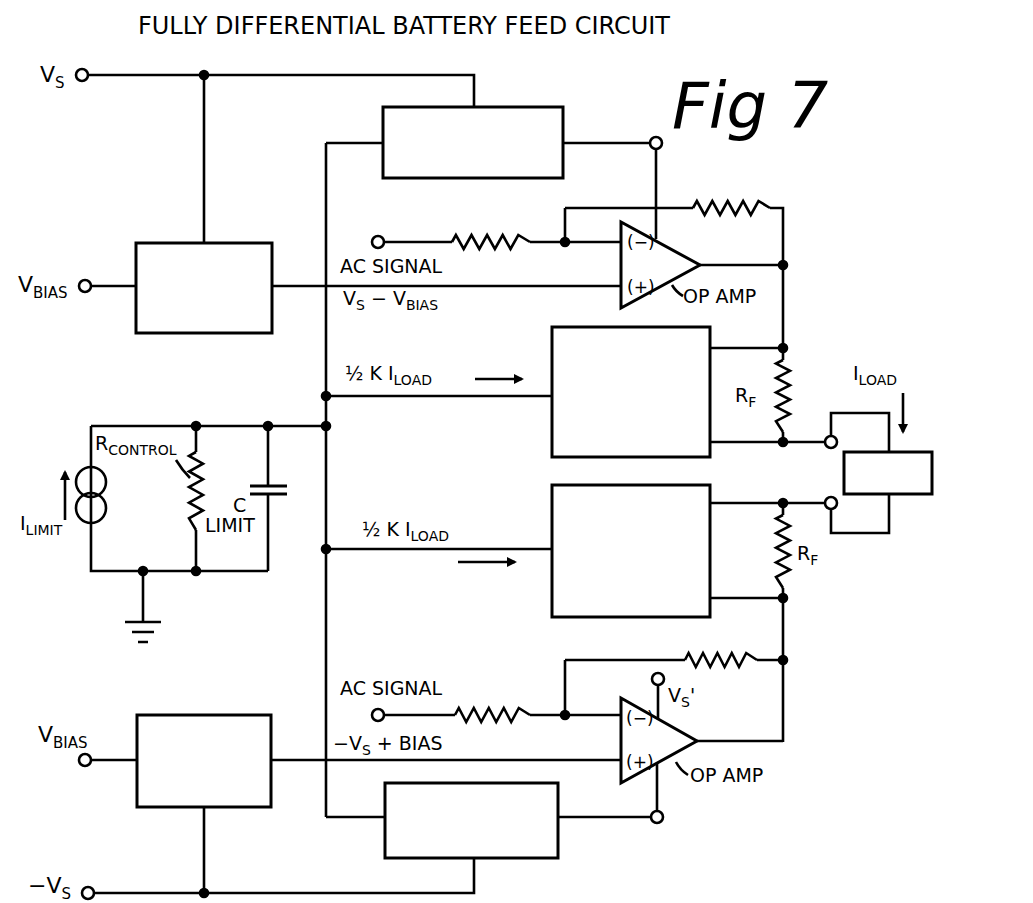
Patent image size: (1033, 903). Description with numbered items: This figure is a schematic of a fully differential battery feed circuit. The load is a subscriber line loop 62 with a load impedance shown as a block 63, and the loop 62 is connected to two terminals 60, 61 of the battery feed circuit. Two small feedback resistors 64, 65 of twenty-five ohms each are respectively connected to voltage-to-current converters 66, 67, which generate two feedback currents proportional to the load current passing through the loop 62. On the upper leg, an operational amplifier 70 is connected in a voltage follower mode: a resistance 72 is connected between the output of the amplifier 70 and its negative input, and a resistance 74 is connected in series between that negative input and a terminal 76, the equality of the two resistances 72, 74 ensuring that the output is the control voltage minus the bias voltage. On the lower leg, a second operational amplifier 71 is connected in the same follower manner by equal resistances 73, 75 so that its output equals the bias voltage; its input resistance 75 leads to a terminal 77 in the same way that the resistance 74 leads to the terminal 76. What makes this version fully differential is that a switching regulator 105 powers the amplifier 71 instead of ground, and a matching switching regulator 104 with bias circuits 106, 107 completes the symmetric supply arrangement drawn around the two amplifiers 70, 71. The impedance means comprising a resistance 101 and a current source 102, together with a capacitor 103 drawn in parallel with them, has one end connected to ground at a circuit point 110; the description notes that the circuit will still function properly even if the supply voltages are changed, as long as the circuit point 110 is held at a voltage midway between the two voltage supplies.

The terminal 60 is at (778, 447).
The terminal 61 is at (778, 500).
The subscriber line loop 62 is at (858, 413).
The load impedance 63 is at (910, 494).
The feedback resistor 64 is at (778, 372).
The feedback resistor 65 is at (777, 548).
The voltage-to-current converter 66 is at (552, 420).
The voltage-to-current converter 67 is at (552, 506).
The operational amplifier 70 is at (684, 257).
The operational amplifier 71 is at (621, 745).
The resistance 72 is at (738, 208).
The resistance 73 is at (740, 667).
The resistance 74 is at (518, 240).
The resistance 75 is at (491, 710).
The terminal 76 is at (386, 238).
The AC signal input terminal 77 is at (372, 716).
The resistance 101 is at (200, 478).
The current 102 is at (105, 512).
The limit capacitor 103 is at (281, 486).
The switching regulator 104 is at (546, 107).
The switching regulator 105 is at (558, 838).
The bias circuit 106 is at (250, 243).
The bias circuit 107 is at (248, 715).
The circuit point 110 is at (151, 577).